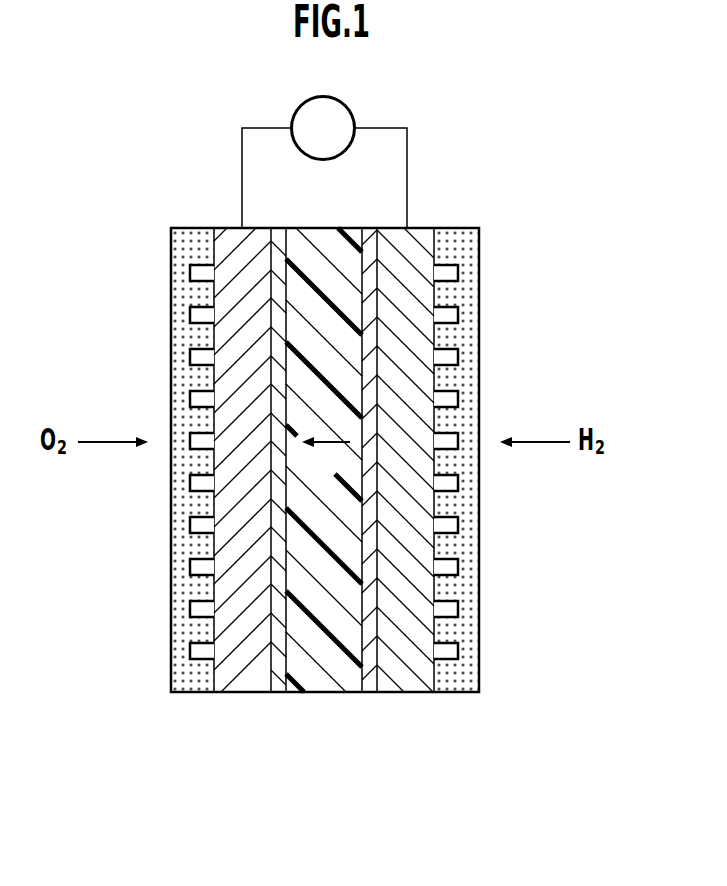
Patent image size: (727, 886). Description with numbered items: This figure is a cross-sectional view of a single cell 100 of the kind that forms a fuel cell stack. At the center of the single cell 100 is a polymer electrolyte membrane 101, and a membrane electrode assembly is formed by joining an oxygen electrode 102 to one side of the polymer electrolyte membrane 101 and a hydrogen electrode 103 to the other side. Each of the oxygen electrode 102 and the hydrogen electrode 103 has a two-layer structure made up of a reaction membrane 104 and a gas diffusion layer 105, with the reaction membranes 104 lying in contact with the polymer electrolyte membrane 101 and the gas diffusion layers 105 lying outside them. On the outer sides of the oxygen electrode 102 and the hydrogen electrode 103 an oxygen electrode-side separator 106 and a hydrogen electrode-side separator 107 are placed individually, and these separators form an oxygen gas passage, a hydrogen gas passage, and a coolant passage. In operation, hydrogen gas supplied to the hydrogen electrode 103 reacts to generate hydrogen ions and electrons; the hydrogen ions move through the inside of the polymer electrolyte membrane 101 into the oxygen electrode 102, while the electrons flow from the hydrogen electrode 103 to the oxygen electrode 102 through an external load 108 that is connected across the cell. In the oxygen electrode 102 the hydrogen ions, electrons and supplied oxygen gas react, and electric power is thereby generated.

The single cell 100 is at (436, 203).
The polymer electrolyte membrane 101 is at (335, 692).
The oxygen electrode 102 is at (305, 773).
The hydrogen electrode 103 is at (457, 773).
The reaction membrane 104 is at (280, 692).
The gas diffusion layer 105 is at (232, 692).
The oxygen electrode-side separator 106 is at (170, 247).
The hydrogen electrode-side separator 107 is at (480, 245).
The load 108 is at (345, 104).